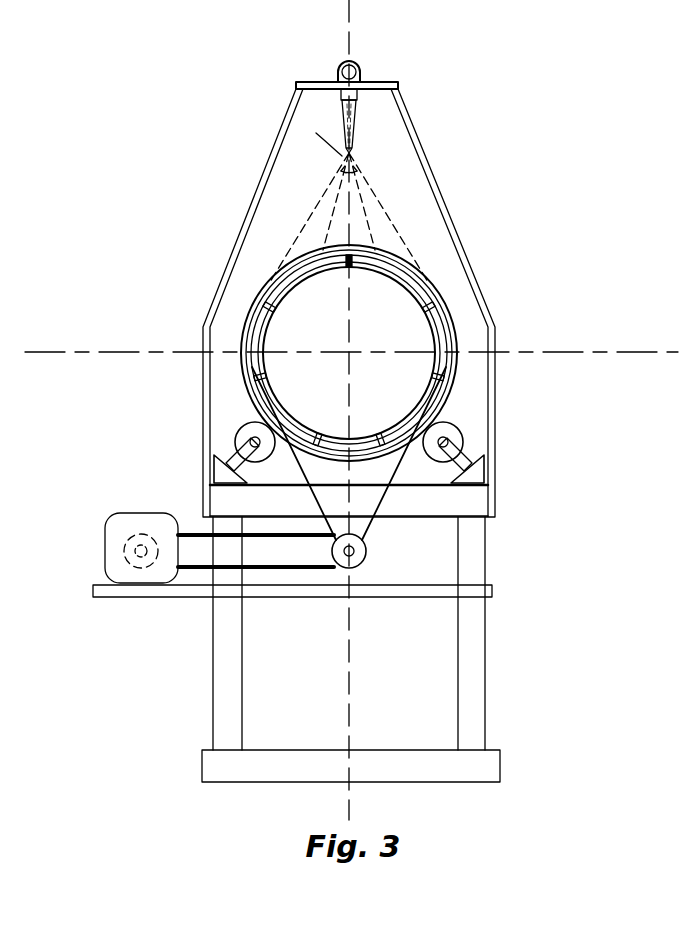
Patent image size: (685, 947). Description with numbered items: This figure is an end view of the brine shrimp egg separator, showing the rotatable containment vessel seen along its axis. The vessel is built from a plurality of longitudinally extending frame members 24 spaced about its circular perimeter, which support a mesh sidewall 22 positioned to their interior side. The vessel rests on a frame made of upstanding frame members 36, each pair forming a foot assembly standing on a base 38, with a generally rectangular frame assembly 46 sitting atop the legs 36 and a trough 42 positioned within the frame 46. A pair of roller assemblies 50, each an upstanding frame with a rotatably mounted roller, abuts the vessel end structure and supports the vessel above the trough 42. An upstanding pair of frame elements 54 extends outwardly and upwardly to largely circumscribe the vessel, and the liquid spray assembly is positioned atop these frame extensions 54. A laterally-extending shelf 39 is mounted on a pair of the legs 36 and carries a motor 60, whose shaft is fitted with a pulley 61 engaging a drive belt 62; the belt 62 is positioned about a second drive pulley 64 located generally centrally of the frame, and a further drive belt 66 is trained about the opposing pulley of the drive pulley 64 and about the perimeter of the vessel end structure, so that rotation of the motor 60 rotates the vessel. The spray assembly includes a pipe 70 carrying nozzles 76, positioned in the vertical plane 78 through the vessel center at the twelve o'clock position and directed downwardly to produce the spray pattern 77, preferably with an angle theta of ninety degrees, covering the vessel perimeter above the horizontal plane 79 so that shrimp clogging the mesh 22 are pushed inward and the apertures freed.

The mesh sidewall 22 is at (428, 318).
The longitudinally extending frame members 24 is at (437, 292).
The upstanding frame members 36 is at (225, 632).
The base 38 is at (410, 757).
The laterally-extending shelf 39 is at (375, 598).
The trough 42 is at (377, 526).
The frame assembly 46 is at (477, 497).
The roller assemblies 50 is at (243, 420).
The upstanding frame elements 54 is at (448, 202).
The motor 60 is at (118, 512).
The pulley 61 is at (127, 543).
The drive belt 62 is at (188, 532).
The drive pulley 64 is at (365, 561).
The drive belt 66 is at (452, 500).
The longitudinally-extending pipe 70 is at (338, 65).
The nozzles 76 is at (353, 118).
The spray pattern 77 is at (378, 193).
The vertical plane 78 is at (349, 17).
The horizontal plane 79 is at (598, 352).